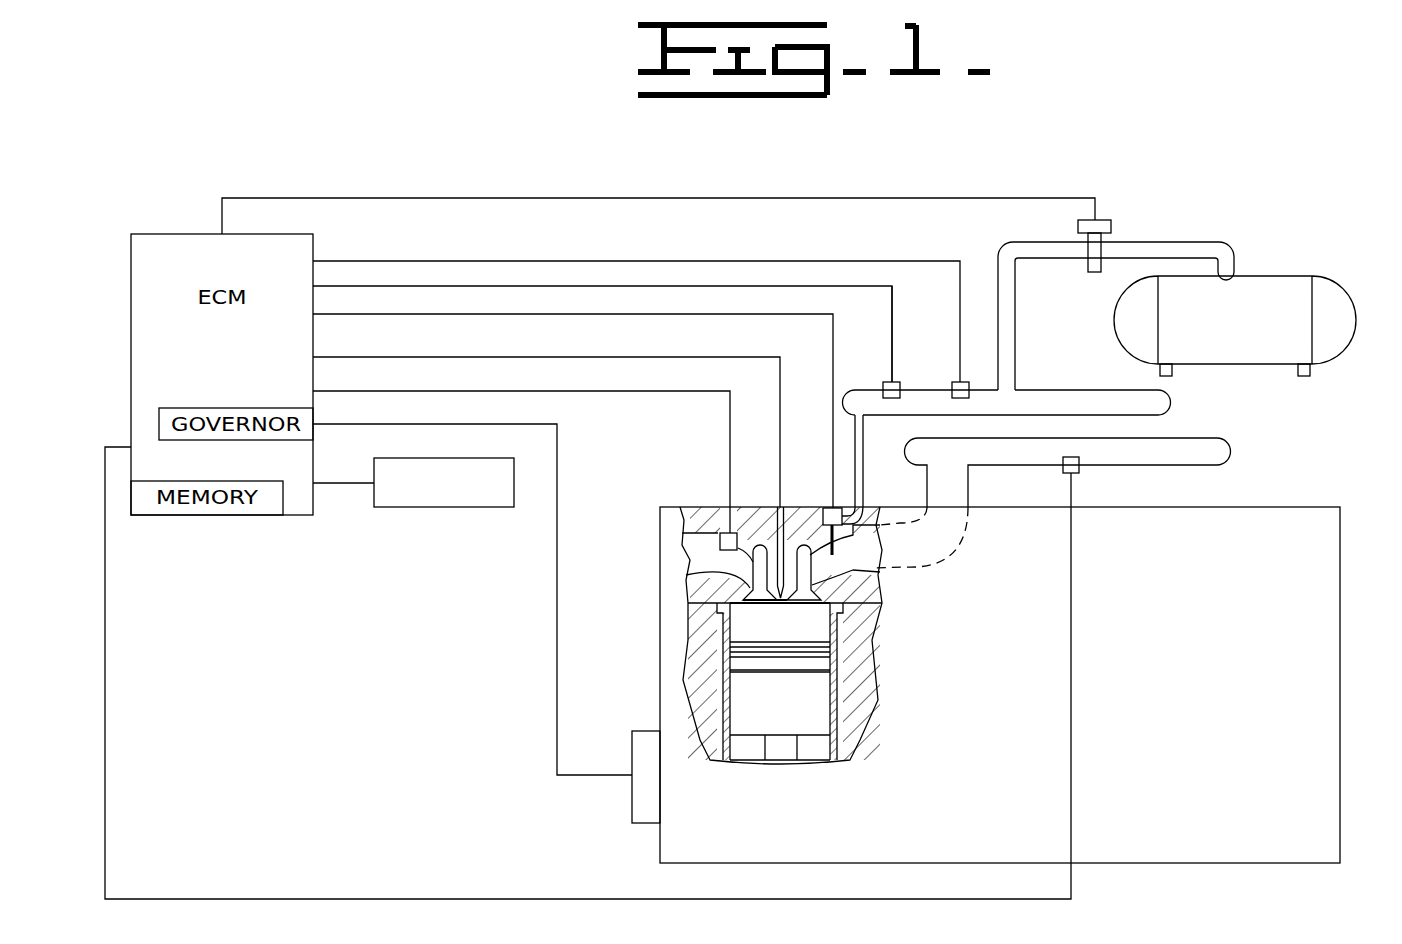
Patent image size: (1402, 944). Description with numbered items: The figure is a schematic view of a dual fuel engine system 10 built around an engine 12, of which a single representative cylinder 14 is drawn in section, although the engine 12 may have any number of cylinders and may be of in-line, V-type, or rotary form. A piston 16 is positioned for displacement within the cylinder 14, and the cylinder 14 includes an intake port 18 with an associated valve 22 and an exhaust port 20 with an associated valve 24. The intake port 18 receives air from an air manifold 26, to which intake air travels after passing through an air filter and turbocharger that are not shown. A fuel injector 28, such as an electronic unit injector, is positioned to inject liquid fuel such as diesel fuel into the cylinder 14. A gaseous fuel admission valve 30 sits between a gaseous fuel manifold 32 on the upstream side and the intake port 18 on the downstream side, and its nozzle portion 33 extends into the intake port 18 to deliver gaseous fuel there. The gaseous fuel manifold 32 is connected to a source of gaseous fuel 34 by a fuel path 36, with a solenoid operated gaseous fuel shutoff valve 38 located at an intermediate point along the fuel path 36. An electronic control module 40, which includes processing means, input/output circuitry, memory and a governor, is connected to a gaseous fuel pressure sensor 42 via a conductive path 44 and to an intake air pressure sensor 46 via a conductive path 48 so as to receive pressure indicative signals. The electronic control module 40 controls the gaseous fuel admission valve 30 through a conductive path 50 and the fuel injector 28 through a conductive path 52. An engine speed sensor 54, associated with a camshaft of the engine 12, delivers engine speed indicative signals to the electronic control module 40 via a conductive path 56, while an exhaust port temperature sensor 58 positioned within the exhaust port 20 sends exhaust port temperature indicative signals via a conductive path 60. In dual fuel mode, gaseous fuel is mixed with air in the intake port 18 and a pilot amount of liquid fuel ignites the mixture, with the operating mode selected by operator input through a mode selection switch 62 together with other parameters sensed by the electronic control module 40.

The dual fuel engine system 10 is at (1004, 178).
The engine 12 is at (1340, 652).
The cylinder 14 is at (835, 683).
The piston 16 is at (738, 662).
The intake port 18 is at (827, 567).
The exhaust port 20 is at (715, 545).
The valve 22 is at (812, 590).
The valve 24 is at (712, 568).
The air manifold 26 is at (1210, 438).
The fuel injector 28 is at (773, 600).
The gaseous fuel admission valve 30 is at (826, 507).
The gaseous fuel manifold 32 is at (1055, 390).
The nozzle portion 33 is at (870, 543).
The source of gaseous fuel 34 is at (1295, 276).
The fuel path 36 is at (1190, 242).
The gaseous fuel shutoff valve 38 is at (1111, 225).
The electronic control module 40 is at (197, 233).
The gaseous fuel pressure sensor 42 is at (884, 384).
The conductive path 44 is at (893, 318).
The intake air pressure sensor 46 is at (1080, 468).
The conductive path 48 is at (1071, 762).
The conductive path 50 is at (833, 335).
The conductive path 52 is at (742, 357).
The engine speed sensor 54 is at (632, 790).
The conductive path 56 is at (557, 735).
The exhaust port temperature sensor 58 is at (700, 553).
The conductive path 60 is at (577, 391).
The mode selection switch 62 is at (387, 508).